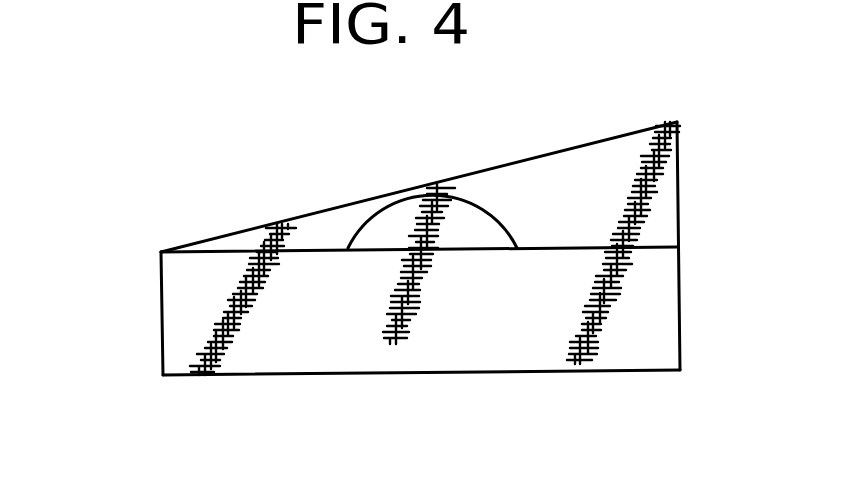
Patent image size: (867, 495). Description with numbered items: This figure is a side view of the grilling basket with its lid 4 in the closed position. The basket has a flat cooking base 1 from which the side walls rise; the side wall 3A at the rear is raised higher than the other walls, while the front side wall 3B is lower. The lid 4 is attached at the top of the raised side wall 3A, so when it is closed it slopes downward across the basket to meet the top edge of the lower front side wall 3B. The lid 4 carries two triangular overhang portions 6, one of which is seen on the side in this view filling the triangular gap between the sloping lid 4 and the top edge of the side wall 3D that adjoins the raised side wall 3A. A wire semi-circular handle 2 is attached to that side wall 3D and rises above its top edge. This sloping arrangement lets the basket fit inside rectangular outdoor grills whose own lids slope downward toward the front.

The cooking base 1 is at (520, 372).
The wire semi-circular handle 2 is at (463, 197).
The raised side wall 3A is at (680, 268).
The lower front side wall 3B is at (161, 313).
The side wall 3D is at (217, 377).
The lid 4 is at (563, 148).
The triangular overhang portion 6 is at (655, 183).